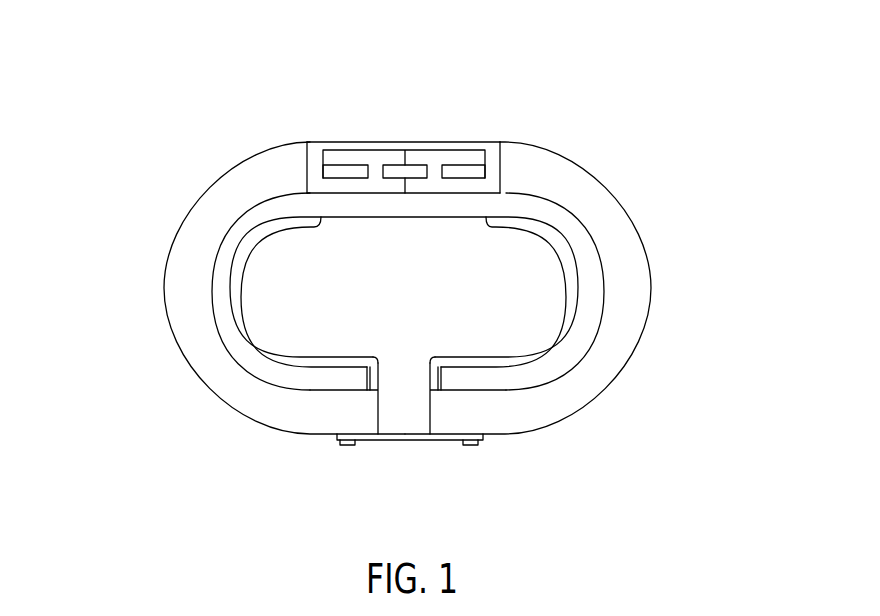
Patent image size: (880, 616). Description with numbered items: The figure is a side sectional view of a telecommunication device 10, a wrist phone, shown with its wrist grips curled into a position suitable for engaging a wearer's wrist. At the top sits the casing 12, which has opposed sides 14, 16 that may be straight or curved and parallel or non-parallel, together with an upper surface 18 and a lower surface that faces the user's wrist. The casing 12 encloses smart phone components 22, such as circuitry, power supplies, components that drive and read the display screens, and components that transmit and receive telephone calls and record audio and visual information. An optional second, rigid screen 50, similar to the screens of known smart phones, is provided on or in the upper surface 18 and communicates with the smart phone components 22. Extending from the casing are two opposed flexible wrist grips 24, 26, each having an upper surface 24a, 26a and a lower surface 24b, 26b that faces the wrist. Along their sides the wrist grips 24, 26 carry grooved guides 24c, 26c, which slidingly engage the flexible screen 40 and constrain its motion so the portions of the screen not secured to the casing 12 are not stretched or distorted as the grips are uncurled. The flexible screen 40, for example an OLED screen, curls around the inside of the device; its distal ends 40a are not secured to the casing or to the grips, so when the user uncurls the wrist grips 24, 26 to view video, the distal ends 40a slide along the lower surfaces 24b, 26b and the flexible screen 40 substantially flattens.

The telecommunication device 10 is at (660, 173).
The casing 12 is at (490, 183).
The side 14 is at (304, 172).
The side 16 is at (500, 168).
The upper surface 18 is at (492, 141).
The smart phone components 22 is at (358, 165).
The flexible wrist grip 24 is at (190, 330).
The upper surface 24a is at (165, 288).
The lower surface 24b is at (214, 250).
The grooved guide 24c is at (270, 352).
The flexible wrist grip 26 is at (625, 318).
The upper surface 26a is at (651, 302).
The lower surface 26b is at (602, 262).
The grooved guide 26c is at (543, 347).
The flexible screen 40 is at (245, 236).
The distal ends 40a is at (367, 372).
The second rigid screen 50 is at (340, 146).